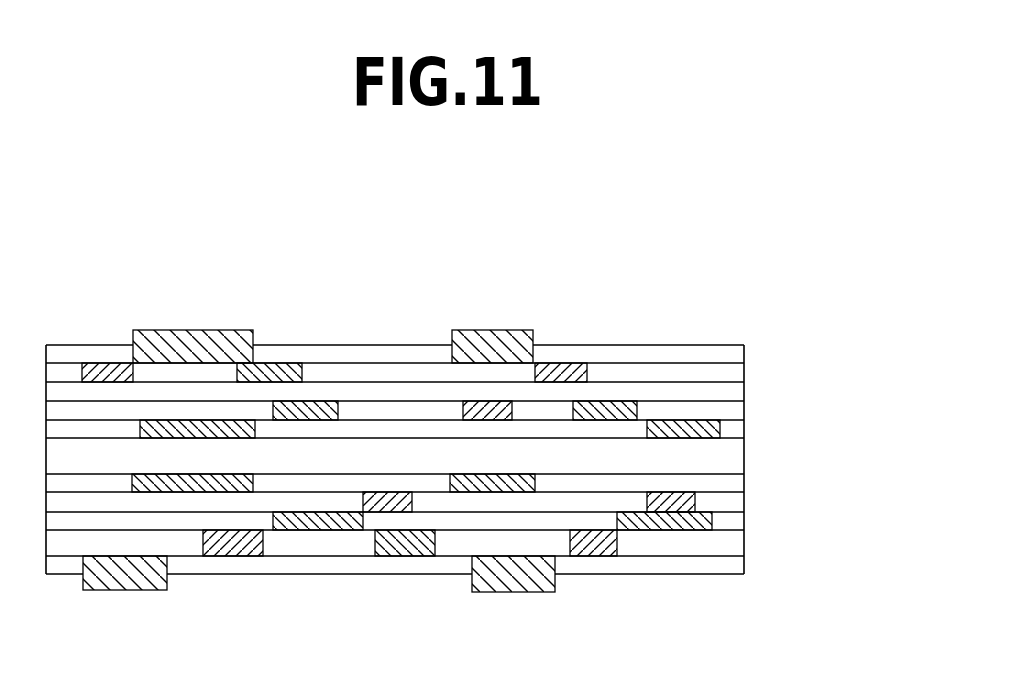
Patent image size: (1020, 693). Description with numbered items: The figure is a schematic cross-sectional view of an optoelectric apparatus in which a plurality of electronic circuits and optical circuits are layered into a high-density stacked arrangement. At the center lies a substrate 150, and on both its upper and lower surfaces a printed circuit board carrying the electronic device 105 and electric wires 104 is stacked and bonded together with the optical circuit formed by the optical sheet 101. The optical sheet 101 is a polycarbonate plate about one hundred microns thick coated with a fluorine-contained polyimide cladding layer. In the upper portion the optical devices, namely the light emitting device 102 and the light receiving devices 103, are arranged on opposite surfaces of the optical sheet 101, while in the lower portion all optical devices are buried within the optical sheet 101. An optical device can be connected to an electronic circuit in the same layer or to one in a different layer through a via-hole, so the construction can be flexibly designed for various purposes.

The optical sheet 101 is at (735, 393).
The light emitting device 102 is at (107, 365).
The light receiving device 103 is at (323, 400).
The electric wires 104 is at (427, 357).
The electronic device 105 is at (168, 432).
The substrate 150 is at (735, 450).